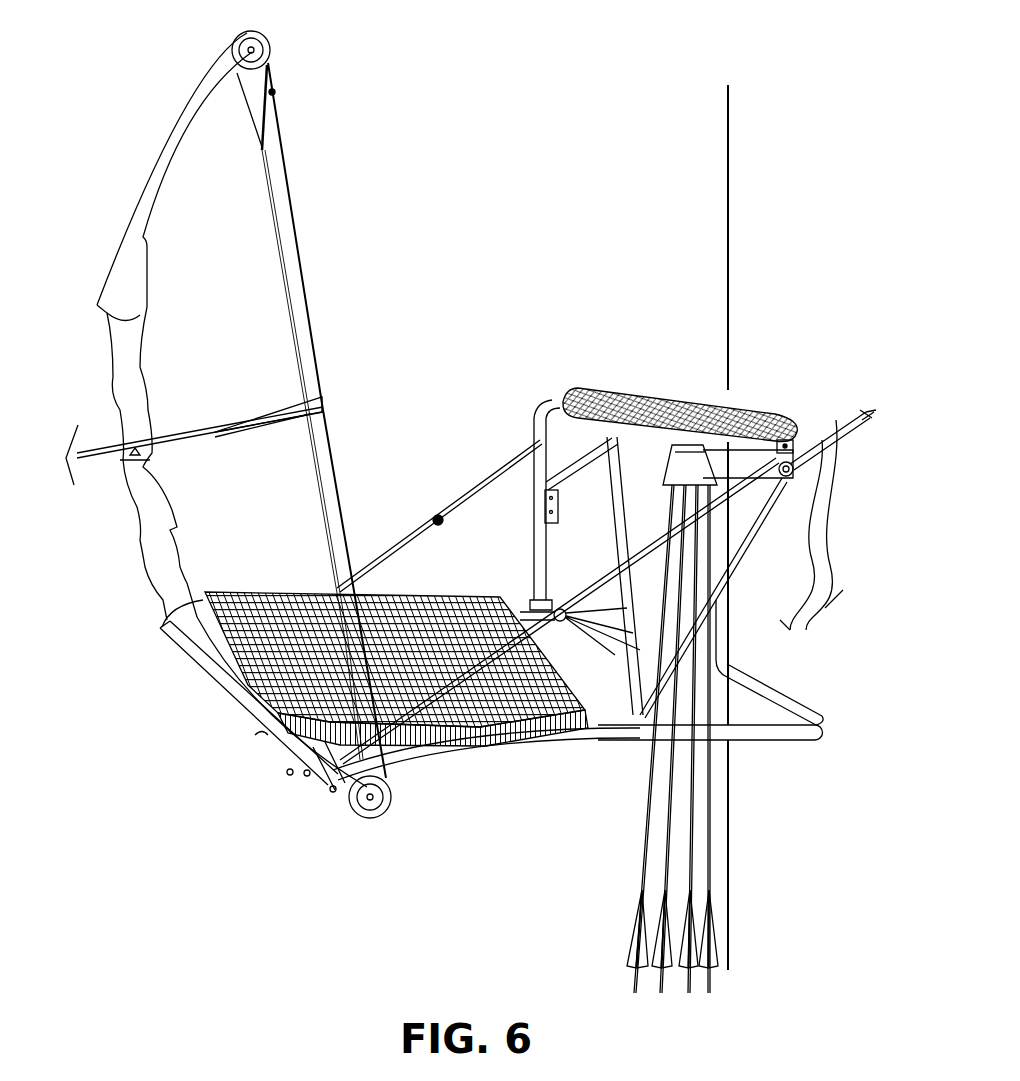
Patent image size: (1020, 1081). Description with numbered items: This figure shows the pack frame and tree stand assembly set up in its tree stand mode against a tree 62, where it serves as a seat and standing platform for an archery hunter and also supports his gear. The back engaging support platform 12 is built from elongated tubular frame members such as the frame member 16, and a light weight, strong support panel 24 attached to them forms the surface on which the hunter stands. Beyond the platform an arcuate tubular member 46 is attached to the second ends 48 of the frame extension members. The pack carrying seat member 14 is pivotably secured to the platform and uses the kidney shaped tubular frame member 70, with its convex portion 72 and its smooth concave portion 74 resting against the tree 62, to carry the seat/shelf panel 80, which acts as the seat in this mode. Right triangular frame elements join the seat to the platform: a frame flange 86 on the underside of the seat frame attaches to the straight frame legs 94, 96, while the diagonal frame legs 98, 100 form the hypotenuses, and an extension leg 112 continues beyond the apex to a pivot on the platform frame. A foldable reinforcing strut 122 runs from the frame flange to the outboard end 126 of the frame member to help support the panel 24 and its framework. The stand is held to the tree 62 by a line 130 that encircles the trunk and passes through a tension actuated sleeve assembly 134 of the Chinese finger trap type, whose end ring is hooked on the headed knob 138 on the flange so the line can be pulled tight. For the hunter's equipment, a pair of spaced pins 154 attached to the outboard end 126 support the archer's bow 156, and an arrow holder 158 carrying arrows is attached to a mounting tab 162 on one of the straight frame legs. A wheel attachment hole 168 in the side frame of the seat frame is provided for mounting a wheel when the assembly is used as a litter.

The back engaging support platform 12 is at (517, 650).
The pack carrying seat member 14 is at (698, 659).
The elongated frame member 16 is at (520, 737).
The support panel 24 is at (230, 590).
The arcuate tubular member 46 is at (750, 688).
The second end of tubular extension frame member 48 is at (777, 733).
The tree 62 is at (748, 226).
The kidney shaped tubular frame member 70 is at (556, 543).
The convex portion 72 is at (575, 412).
The concave portion 74 is at (803, 430).
The seat/shelf panel 80 is at (647, 400).
The frame flange 86 is at (760, 473).
The straight frame leg 94 is at (633, 565).
The straight frame leg 96 is at (535, 513).
The diagonal frame leg 98 is at (750, 540).
The diagonal frame leg 100 is at (602, 505).
The extension leg 112 is at (569, 506).
The foldable reinforcing strut 122 is at (405, 547).
The outboard end of elongated tubular frame member 126 is at (257, 733).
The elongated rope or line 130 is at (827, 557).
The rope encircling tension actuated sleeve assembly 134 is at (862, 417).
The headed knob 138 is at (800, 477).
The spaced pins 154 is at (323, 793).
The archer's bow 156 is at (165, 568).
The arrow holder 158 is at (700, 455).
The mounting tab 162 is at (606, 650).
The wheel attachment hole 168 is at (690, 857).